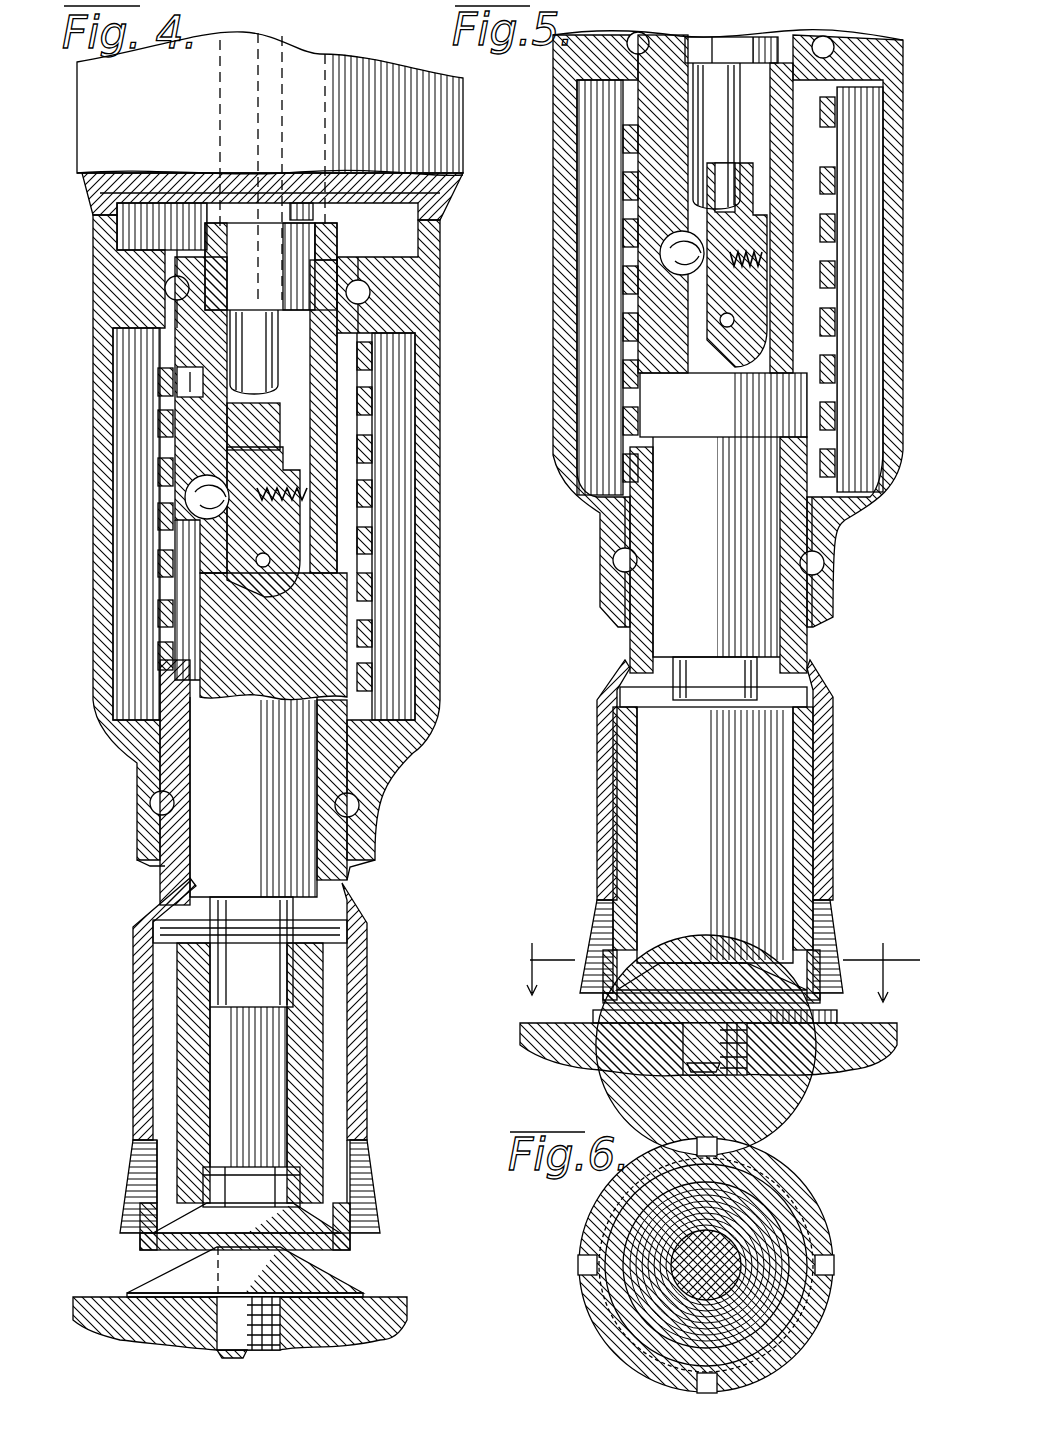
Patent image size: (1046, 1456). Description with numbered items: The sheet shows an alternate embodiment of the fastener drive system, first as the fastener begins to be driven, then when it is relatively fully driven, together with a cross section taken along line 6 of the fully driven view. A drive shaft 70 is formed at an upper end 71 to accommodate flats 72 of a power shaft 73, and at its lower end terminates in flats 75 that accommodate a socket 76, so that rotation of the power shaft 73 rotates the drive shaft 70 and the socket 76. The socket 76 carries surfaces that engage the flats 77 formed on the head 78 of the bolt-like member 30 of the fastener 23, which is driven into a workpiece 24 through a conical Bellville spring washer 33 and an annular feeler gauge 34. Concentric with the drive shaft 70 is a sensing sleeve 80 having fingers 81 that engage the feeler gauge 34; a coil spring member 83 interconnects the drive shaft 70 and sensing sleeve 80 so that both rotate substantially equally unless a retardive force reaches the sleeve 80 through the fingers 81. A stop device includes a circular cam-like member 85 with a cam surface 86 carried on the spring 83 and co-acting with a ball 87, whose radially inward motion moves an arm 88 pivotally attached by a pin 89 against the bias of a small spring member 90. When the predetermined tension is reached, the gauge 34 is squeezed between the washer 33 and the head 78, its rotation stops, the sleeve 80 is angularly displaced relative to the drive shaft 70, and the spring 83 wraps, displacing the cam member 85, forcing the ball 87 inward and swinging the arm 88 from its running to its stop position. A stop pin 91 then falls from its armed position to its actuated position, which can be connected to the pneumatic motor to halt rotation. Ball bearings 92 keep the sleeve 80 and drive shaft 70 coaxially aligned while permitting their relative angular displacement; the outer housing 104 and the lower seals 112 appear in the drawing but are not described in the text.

In FIG. 5, the section line 6 is at (721, 958).
In FIG. 4, the fastener 23 is at (397, 1281).
In FIG. 5, the fastener 23 is at (852, 1019).
In FIG. 4, the workpiece 24 is at (340, 1340).
In FIG. 5, the workpiece 24 is at (860, 1060).
In FIG. 4, the bolt-like member 30 is at (250, 1352).
In FIG. 5, the bolt-like member 30 is at (705, 1058).
In FIG. 6, the bolt-like member 30 is at (708, 1210).
In FIG. 4, the conical spring washer 33 is at (325, 1273).
In FIG. 5, the conical spring washer 33 is at (595, 1014).
In FIG. 4, the feeler gauge 34 is at (340, 1212).
In FIG. 5, the feeler gauge 34 is at (812, 975).
In FIG. 6, the feeler gauge 34 is at (810, 1228).
In FIG. 4, the drive shaft 70 is at (310, 790).
In FIG. 5, the drive shaft 70 is at (773, 480).
In FIG. 4, the upper end 71 is at (320, 242).
In FIG. 4, the flats 72 is at (337, 258).
In FIG. 4, the power shaft 73 is at (312, 62).
In FIG. 4, the flats 75 is at (300, 920).
In FIG. 5, the flats 75 is at (760, 680).
In FIG. 4, the socket 76 is at (325, 965).
In FIG. 5, the socket 76 is at (795, 745).
In FIG. 4, the flats 77 is at (320, 1138).
In FIG. 4, the head 78 is at (300, 1195).
In FIG. 5, the head 78 is at (750, 965).
In FIG. 6, the head 78 is at (756, 1165).
In FIG. 4, the sensing sleeve 80 is at (135, 922).
In FIG. 5, the sensing sleeve 80 is at (605, 715).
In FIG. 4, the fingers 81 is at (135, 1178).
In FIG. 5, the fingers 81 is at (597, 915).
In FIG. 6, the fingers 81 is at (652, 1158).
In FIG. 4, the coil spring member 83 is at (373, 530).
In FIG. 5, the coil spring member 83 is at (835, 305).
In FIG. 4, the cam-like member 85 is at (178, 453).
In FIG. 4, the cam surface 86 is at (160, 477).
In FIG. 5, the cam surface 86 is at (630, 303).
In FIG. 4, the ball 87 is at (200, 543).
In FIG. 5, the ball 87 is at (670, 260).
In FIG. 4, the arm 88 is at (228, 540).
In FIG. 5, the arm 88 is at (750, 230).
In FIG. 4, the pin 89 is at (268, 562).
In FIG. 5, the pin 89 is at (725, 330).
In FIG. 4, the spring member 90 is at (300, 490).
In FIG. 5, the spring member 90 is at (765, 258).
In FIG. 4, the stop pin 91 is at (273, 372).
In FIG. 5, the stop pin 91 is at (740, 103).
In FIG. 4, the ball bearings 92 is at (163, 286).
In FIG. 5, the ball bearings 92 is at (648, 38).
In FIG. 4, the outer housing 104 is at (435, 600).
In FIG. 5, the outer housing 104 is at (728, 328).
In FIG. 5, the O-ring seal 112 is at (612, 561).